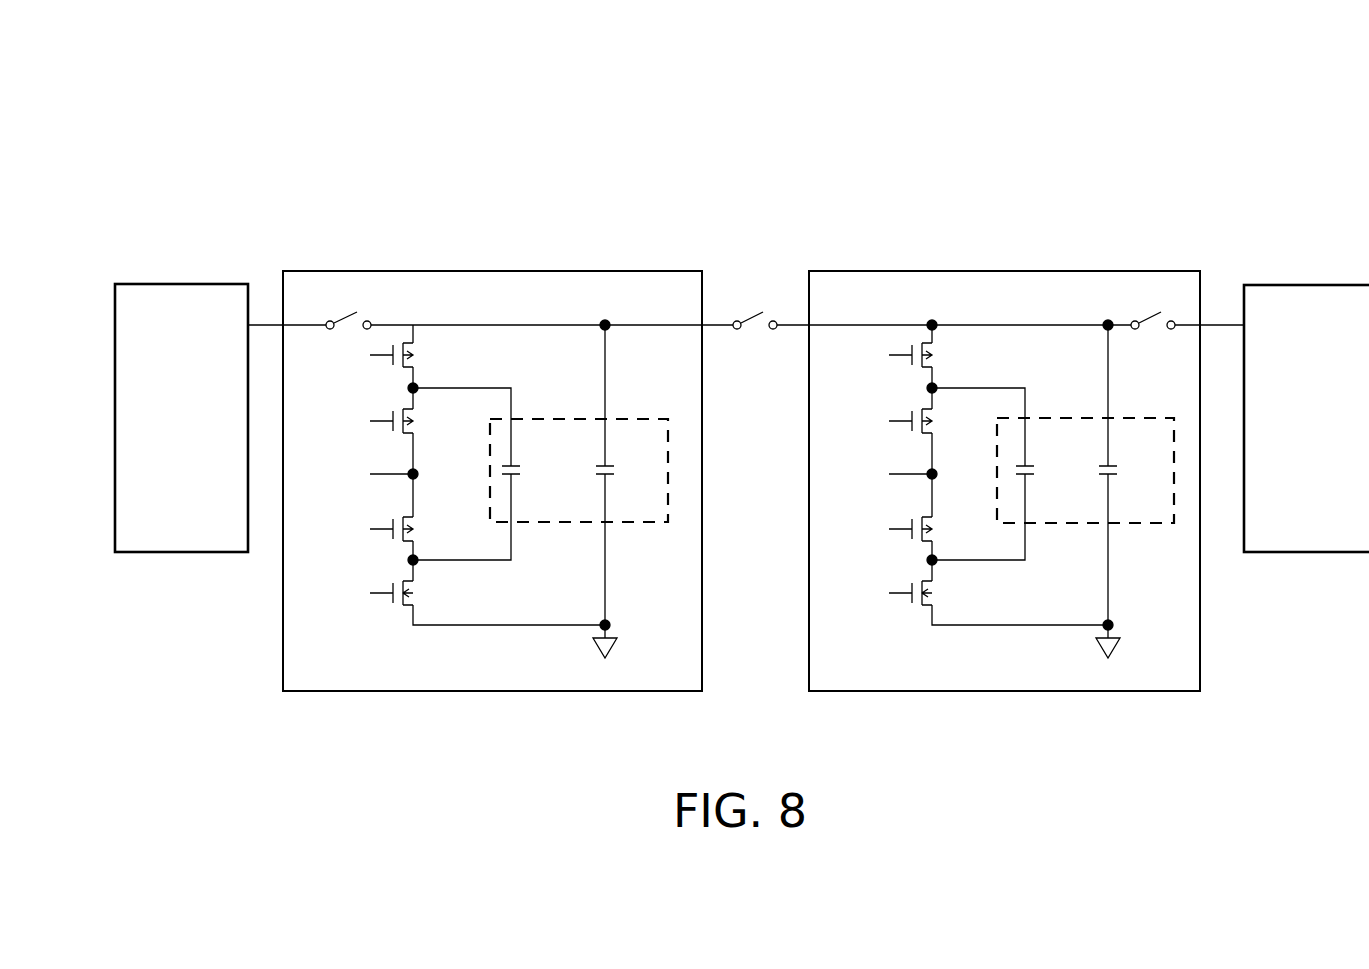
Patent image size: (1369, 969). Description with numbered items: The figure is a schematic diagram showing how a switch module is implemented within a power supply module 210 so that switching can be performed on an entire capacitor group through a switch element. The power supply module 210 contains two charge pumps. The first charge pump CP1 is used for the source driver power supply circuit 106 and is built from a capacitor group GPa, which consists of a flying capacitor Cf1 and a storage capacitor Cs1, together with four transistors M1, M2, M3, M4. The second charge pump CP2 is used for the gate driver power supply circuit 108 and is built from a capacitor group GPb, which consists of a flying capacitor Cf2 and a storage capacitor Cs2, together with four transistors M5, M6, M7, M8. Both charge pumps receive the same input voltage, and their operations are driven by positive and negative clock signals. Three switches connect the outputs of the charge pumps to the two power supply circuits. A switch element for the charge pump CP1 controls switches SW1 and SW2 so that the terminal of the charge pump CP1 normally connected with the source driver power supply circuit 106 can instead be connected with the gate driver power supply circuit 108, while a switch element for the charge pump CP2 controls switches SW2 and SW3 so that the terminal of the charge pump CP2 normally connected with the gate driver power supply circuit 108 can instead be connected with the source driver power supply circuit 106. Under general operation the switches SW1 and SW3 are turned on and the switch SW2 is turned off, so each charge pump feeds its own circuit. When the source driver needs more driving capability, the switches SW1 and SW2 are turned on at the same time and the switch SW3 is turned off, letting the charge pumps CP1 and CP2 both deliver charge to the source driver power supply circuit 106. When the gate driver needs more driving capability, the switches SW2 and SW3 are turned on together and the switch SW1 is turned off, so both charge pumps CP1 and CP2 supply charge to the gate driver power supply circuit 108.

The source driver power supply circuit 106 is at (181, 284).
The gate driver power supply circuit 108 is at (1309, 285).
The power supply module 210 is at (1200, 145).
The charge pump CP1 is at (490, 271).
The charge pump CP2 is at (1003, 271).
The switch SW1 is at (349, 304).
The switch SW2 is at (755, 304).
The switch SW3 is at (1152, 304).
The transistor M1 is at (417, 354).
The transistor M2 is at (417, 420).
The transistor M3 is at (417, 528).
The transistor M4 is at (417, 592).
The transistor M5 is at (936, 354).
The transistor M6 is at (936, 420).
The transistor M7 is at (936, 528).
The transistor M8 is at (936, 592).
The flying capacitor Cf1 is at (535, 470).
The storage capacitor Cs1 is at (631, 475).
The flying capacitor Cf2 is at (1049, 470).
The storage capacitor Cs2 is at (1134, 475).
The capacitor group GPa is at (558, 419).
The capacitor group GPb is at (1068, 418).